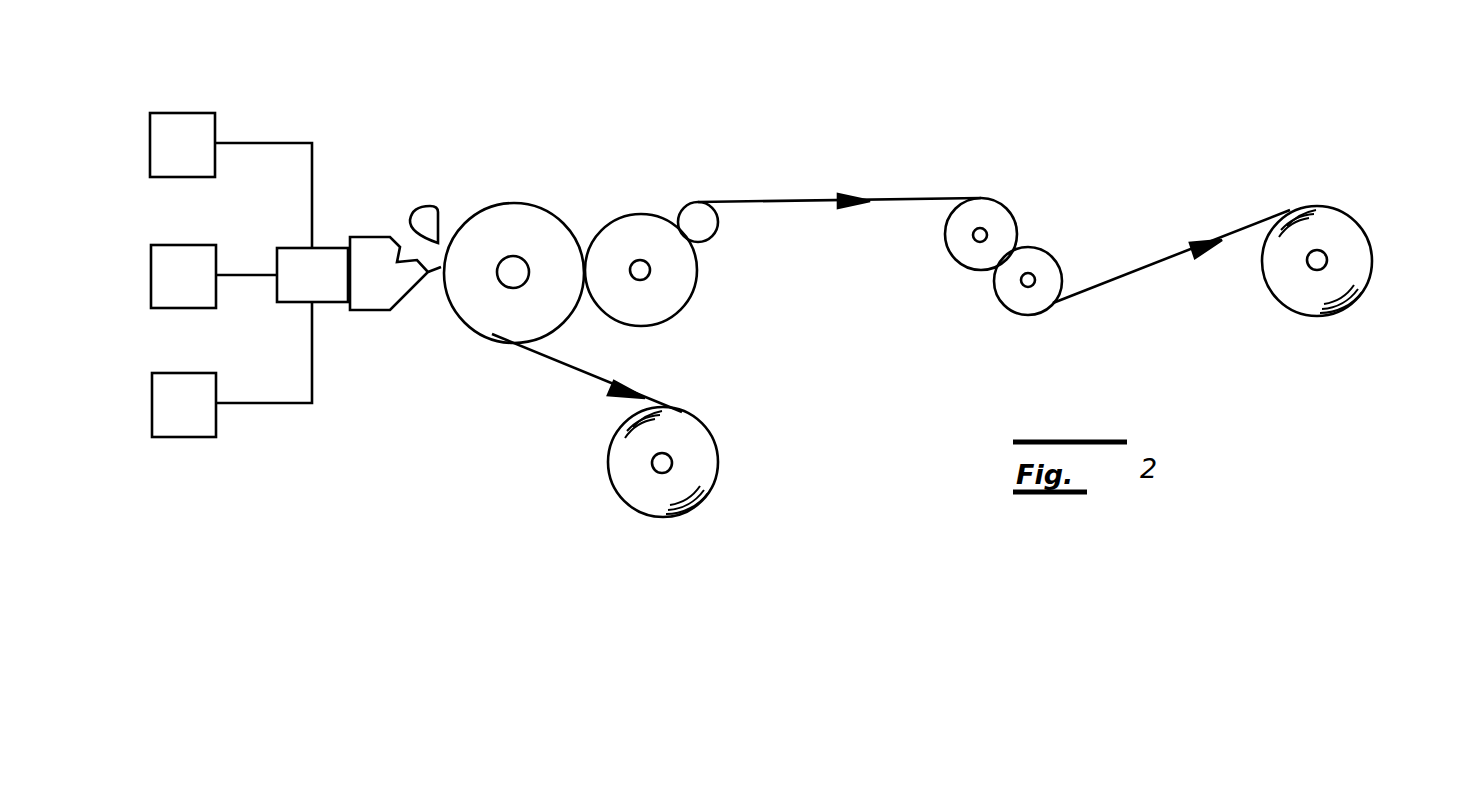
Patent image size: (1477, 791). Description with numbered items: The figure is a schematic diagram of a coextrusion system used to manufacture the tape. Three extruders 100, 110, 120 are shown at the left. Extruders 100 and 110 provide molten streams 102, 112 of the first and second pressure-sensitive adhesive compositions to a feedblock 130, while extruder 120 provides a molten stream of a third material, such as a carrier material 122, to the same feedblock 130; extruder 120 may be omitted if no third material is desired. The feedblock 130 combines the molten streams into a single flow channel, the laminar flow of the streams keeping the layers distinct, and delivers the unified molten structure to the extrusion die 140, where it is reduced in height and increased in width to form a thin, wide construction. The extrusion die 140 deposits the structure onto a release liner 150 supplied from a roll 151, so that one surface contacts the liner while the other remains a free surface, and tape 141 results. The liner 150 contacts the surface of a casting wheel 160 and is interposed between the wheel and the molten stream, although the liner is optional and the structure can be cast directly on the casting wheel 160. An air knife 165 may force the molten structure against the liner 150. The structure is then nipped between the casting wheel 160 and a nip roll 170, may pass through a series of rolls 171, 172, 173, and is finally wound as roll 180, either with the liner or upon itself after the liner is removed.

The extruder 100 is at (174, 113).
The molten stream 102 is at (257, 140).
The extruder 110 is at (180, 372).
The molten stream 112 is at (245, 402).
The extruder 120 is at (170, 245).
The carrier material 122 is at (235, 275).
The feedblock 130 is at (322, 262).
The extrusion die 140 is at (400, 288).
The tape 141 is at (798, 200).
The release liner 150 is at (570, 372).
The roll 151 is at (668, 500).
The casting wheel 160 is at (503, 213).
The air knife 165 is at (427, 210).
The nip roll 170 is at (620, 228).
The roll 171 is at (707, 227).
The roll 172 is at (975, 212).
The roll 173 is at (1035, 255).
The roll 180 is at (1343, 232).